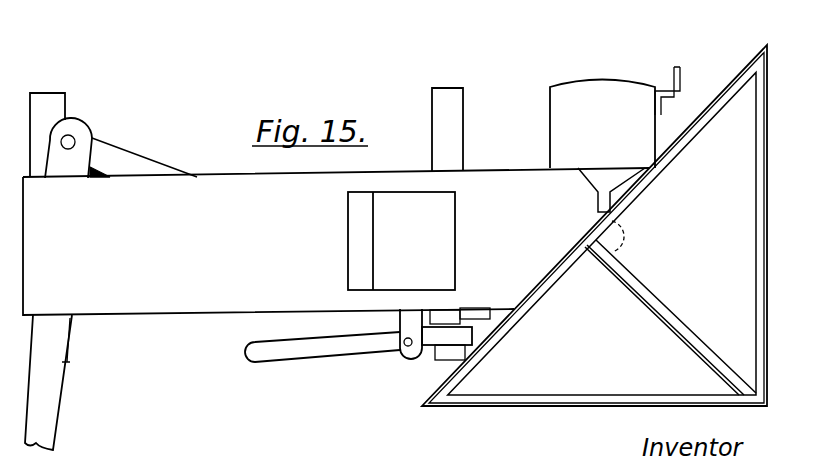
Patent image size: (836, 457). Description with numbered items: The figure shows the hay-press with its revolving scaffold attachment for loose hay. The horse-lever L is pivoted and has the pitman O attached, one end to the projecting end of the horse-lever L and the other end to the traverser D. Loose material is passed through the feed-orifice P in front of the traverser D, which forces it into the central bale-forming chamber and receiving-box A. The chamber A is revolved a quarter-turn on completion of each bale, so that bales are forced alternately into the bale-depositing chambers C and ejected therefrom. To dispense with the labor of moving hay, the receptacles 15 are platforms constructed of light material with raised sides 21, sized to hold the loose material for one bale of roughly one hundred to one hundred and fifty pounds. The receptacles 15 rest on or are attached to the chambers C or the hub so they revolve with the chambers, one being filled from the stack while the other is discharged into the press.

The pitman O is at (121, 157).
The horse-lever L is at (52, 392).
The feed-orifice P is at (402, 213).
The traverser D is at (358, 247).
The bale-depositing chamber C is at (615, 117).
The bale-forming chamber and receiving-box A is at (611, 190).
The raised sides 21 is at (507, 330).
The receptacles 15 is at (670, 308).